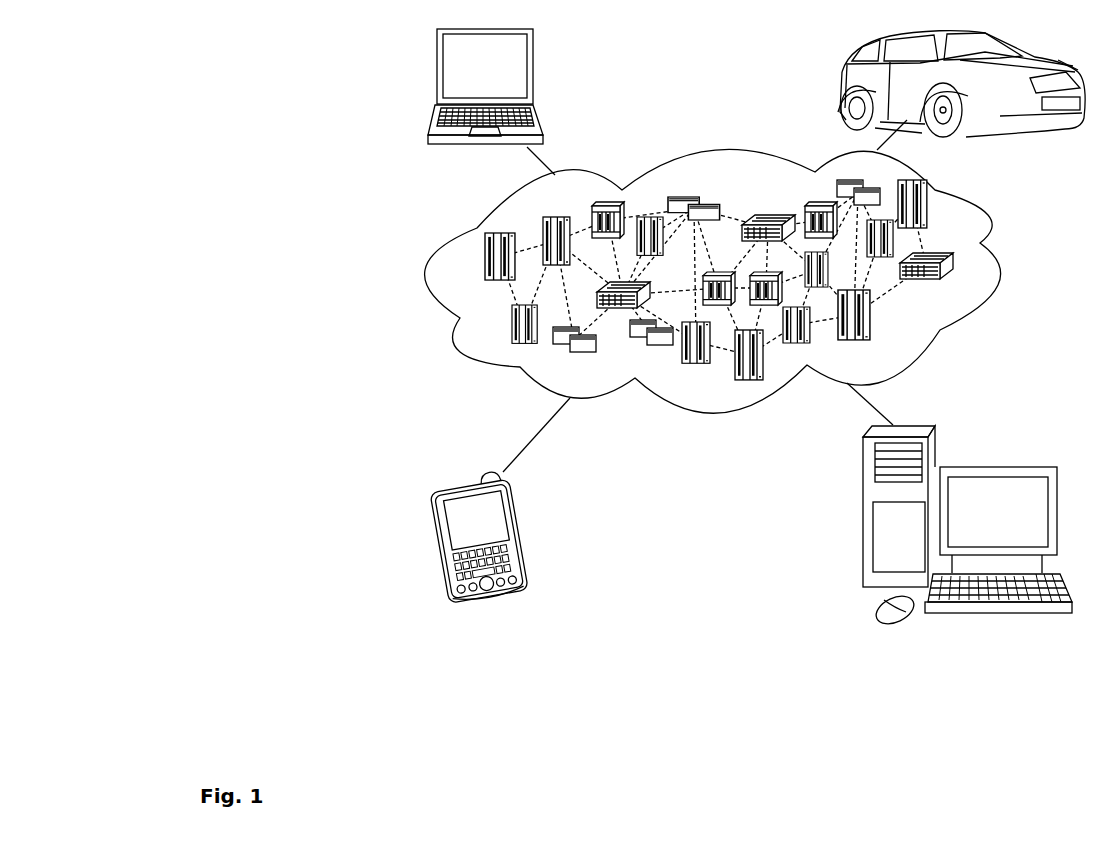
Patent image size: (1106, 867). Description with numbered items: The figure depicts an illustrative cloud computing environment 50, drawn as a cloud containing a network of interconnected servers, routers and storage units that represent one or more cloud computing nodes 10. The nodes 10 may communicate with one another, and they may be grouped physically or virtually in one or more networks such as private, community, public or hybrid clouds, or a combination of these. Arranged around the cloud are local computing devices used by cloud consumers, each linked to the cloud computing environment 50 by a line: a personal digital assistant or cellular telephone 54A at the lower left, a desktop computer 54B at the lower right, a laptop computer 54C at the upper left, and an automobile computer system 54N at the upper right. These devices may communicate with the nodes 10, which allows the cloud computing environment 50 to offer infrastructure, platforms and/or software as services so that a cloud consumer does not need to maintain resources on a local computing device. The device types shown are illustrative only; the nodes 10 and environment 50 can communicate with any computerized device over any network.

The cloud computing nodes 10 is at (960, 285).
The cloud computing environment 50 is at (997, 263).
The personal digital assistant or cellular telephone 54A is at (527, 530).
The desktop computer 54B is at (995, 465).
The laptop computer 54C is at (533, 72).
The automobile computer system 54N is at (843, 83).